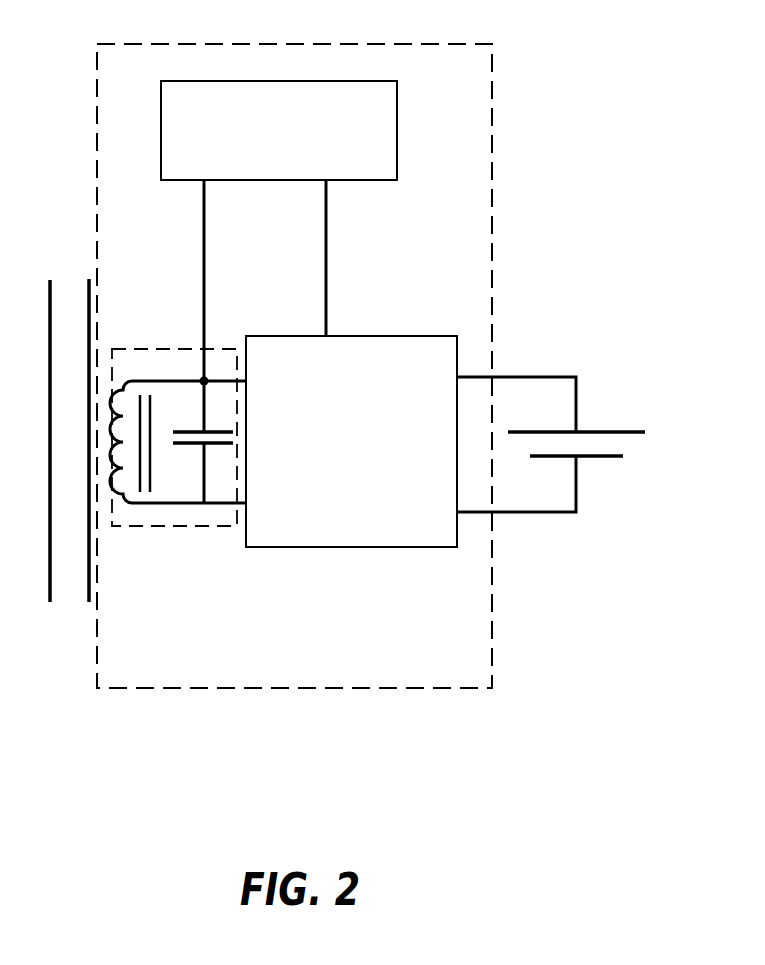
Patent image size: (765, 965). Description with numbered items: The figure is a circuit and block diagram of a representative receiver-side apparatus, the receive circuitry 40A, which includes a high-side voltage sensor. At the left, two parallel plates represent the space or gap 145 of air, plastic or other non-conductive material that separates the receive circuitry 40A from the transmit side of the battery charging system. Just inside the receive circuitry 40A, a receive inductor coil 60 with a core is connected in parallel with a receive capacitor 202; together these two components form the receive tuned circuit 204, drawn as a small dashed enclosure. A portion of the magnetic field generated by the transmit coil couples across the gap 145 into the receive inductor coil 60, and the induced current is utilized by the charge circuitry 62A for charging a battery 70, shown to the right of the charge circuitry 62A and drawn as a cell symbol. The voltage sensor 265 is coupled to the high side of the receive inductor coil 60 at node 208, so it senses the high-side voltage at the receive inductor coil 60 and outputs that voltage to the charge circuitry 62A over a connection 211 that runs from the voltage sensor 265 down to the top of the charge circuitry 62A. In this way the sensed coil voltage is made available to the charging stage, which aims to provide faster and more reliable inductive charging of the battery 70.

The receive circuitry 40A is at (439, 703).
The voltage sensor 265 is at (266, 81).
The charge circuitry 62A is at (407, 336).
The voltage sensor connection line 211 is at (328, 335).
The node 208 is at (206, 378).
The receive tuned circuit 204 is at (208, 528).
The receive inductor coil 60 is at (148, 430).
The receive capacitor 202 is at (190, 445).
The battery 70 is at (592, 431).
The gap 145 is at (82, 598).